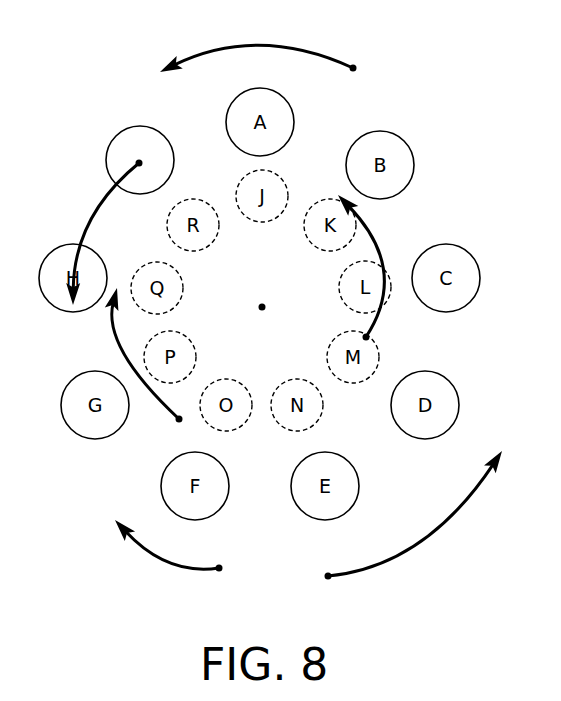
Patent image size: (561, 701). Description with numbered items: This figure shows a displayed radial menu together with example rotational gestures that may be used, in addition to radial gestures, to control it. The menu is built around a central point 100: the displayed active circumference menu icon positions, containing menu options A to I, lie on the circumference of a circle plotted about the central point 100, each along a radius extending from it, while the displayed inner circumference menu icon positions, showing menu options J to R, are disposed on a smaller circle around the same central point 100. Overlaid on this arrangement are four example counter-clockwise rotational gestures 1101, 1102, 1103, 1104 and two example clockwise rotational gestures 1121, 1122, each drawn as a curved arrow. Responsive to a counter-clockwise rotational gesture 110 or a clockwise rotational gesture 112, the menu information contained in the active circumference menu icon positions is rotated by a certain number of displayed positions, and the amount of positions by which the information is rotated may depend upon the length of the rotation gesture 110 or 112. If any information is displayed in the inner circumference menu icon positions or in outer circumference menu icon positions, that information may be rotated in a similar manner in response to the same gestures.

The central point 100 is at (262, 311).
The counter-clockwise rotational gesture 110 is at (267, 323).
The counter-clockwise rotational gesture 1101 is at (315, 58).
The counter-clockwise rotational gesture 1102 is at (358, 223).
The counter-clockwise rotational gesture 1103 is at (428, 536).
The counter-clockwise rotational gesture 1104 is at (92, 218).
The clockwise rotational gesture 112 is at (140, 448).
The clockwise rotational gesture 1121 is at (173, 565).
The clockwise rotational gesture 1122 is at (122, 346).